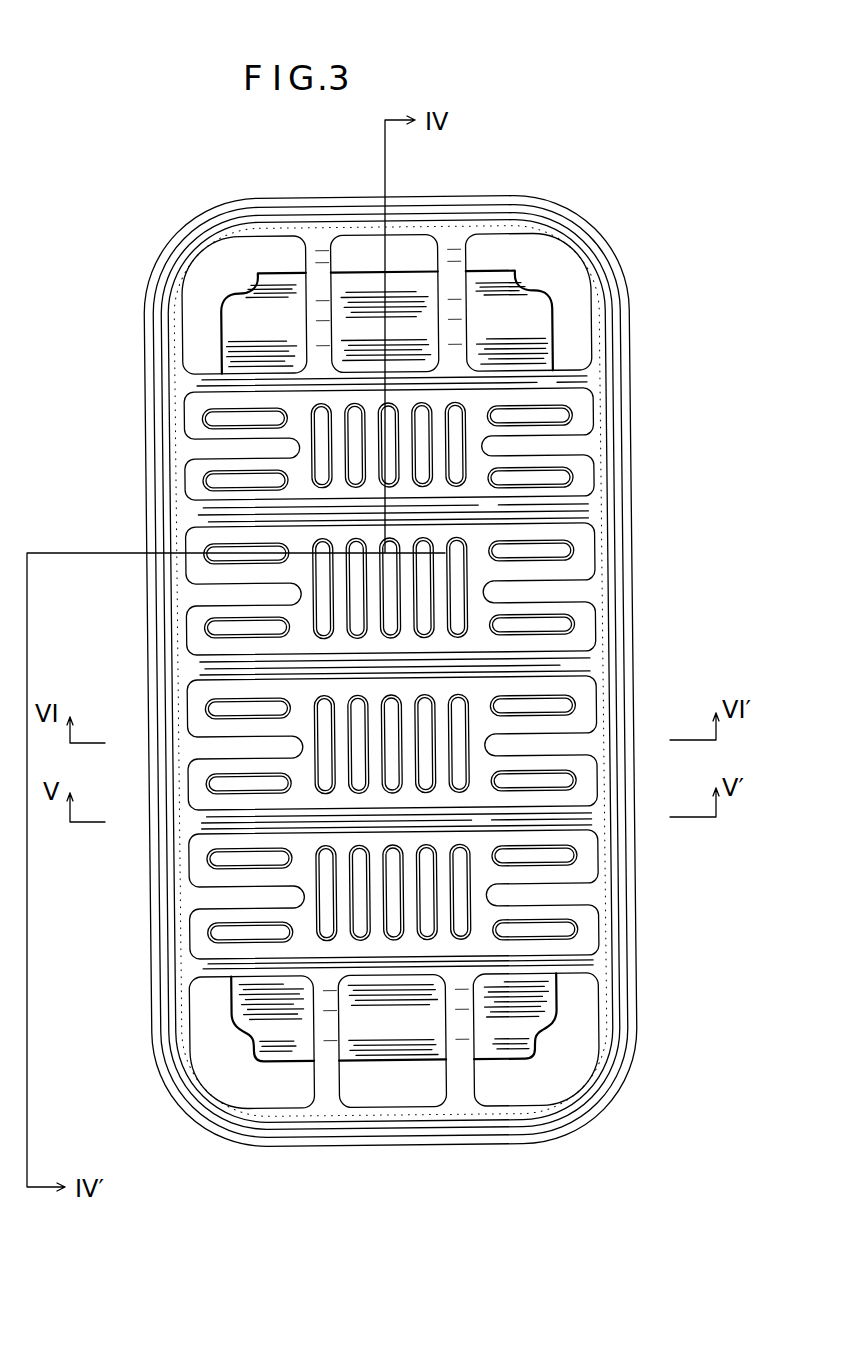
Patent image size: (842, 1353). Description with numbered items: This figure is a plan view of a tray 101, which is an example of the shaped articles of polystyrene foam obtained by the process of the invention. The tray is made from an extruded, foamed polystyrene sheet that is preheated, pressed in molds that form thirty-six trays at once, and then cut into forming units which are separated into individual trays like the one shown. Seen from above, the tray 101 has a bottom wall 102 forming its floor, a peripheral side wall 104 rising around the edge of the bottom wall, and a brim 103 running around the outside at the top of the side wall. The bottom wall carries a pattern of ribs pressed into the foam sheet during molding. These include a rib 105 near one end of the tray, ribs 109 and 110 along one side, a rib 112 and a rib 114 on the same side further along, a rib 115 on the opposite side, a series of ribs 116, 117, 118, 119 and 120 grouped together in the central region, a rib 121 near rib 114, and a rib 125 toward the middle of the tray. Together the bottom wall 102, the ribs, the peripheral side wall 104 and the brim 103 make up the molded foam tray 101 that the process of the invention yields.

The tray 101 is at (683, 367).
The bottom wall 102 is at (518, 318).
The brim 103 is at (620, 464).
The peripheral side wall 104 is at (600, 628).
The rib 105 is at (462, 298).
The rib 109 is at (200, 396).
The rib 110 is at (205, 521).
The rib 112 is at (225, 822).
The rib 114 is at (232, 742).
The rib 115 is at (547, 740).
The rib 116 is at (463, 775).
The rib 117 is at (432, 790).
The rib 118 is at (397, 793).
The rib 119 is at (363, 793).
The rib 120 is at (330, 792).
The rib 121 is at (225, 702).
The rib 125 is at (384, 443).